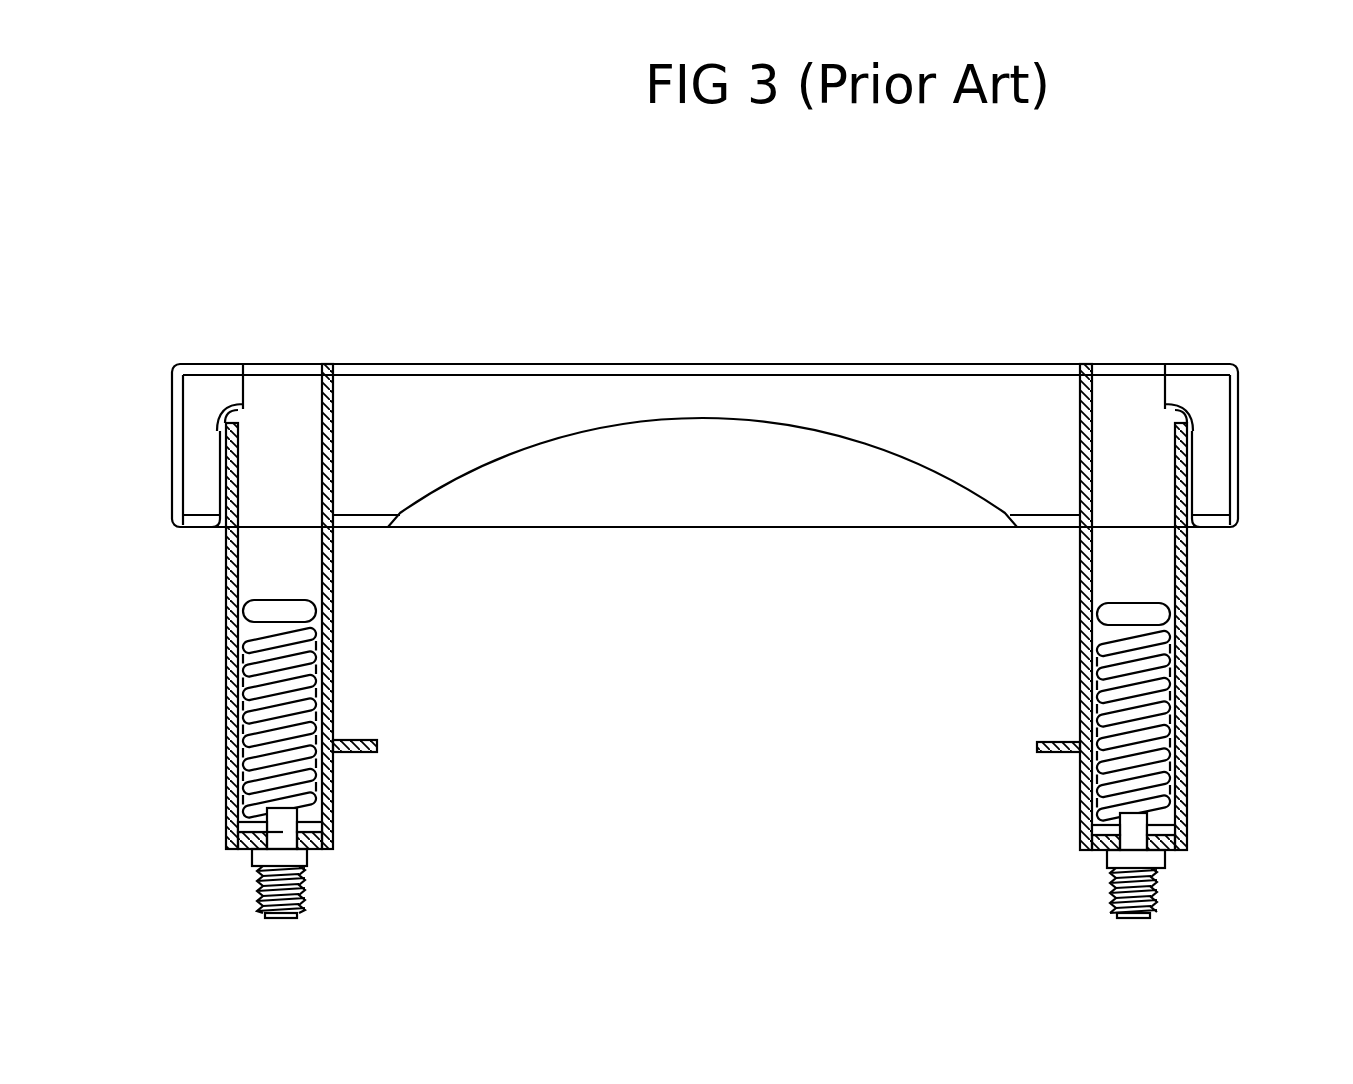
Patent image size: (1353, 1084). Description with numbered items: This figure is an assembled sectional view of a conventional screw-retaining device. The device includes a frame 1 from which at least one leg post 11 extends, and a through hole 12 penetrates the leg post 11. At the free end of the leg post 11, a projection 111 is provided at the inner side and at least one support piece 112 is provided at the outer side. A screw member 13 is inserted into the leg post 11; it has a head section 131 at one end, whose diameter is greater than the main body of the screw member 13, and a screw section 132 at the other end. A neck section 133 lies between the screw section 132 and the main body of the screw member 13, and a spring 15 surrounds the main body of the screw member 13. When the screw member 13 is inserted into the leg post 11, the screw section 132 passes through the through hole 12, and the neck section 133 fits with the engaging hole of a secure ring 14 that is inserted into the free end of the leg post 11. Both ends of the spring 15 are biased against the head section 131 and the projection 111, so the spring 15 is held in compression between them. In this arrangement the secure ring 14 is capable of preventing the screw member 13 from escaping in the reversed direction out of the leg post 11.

The frame 1 is at (872, 410).
The leg post 11 is at (1188, 580).
The projection 111 is at (1162, 851).
The support piece 112 is at (1057, 742).
The through hole 12 is at (1142, 398).
The screw member 13 is at (258, 742).
The head section 131 is at (256, 610).
The screw section 132 is at (303, 893).
The neck section 133 is at (246, 850).
The secure ring 14 is at (1105, 852).
The spring 15 is at (258, 727).